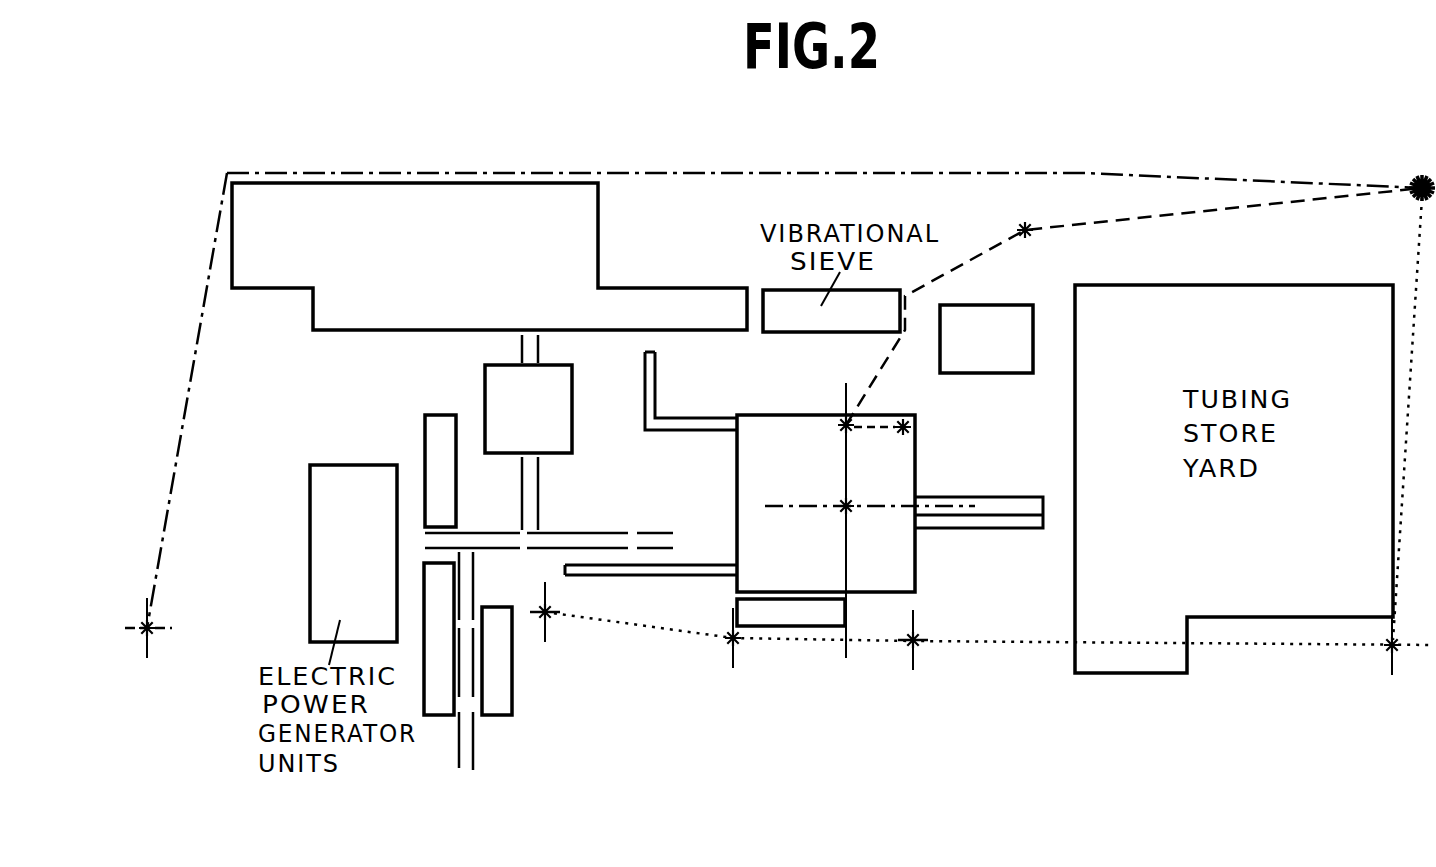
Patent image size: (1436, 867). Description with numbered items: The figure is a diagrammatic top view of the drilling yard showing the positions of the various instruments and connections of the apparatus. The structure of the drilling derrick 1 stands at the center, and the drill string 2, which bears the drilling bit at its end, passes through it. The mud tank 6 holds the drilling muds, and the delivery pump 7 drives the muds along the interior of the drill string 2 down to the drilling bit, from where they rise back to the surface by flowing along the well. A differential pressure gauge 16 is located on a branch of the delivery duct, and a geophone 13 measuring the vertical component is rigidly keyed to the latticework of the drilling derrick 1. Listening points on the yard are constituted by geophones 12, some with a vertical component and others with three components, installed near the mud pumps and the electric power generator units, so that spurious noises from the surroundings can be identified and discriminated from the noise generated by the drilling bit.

The drilling derrick 1 is at (826, 503).
The drill string 2 is at (870, 522).
The mud tank 6 is at (489, 256).
The delivery pump 7 is at (528, 409).
The geophones 12 is at (762, 635).
The geophone 13 is at (882, 445).
The differential pressure gauge 16 is at (831, 443).